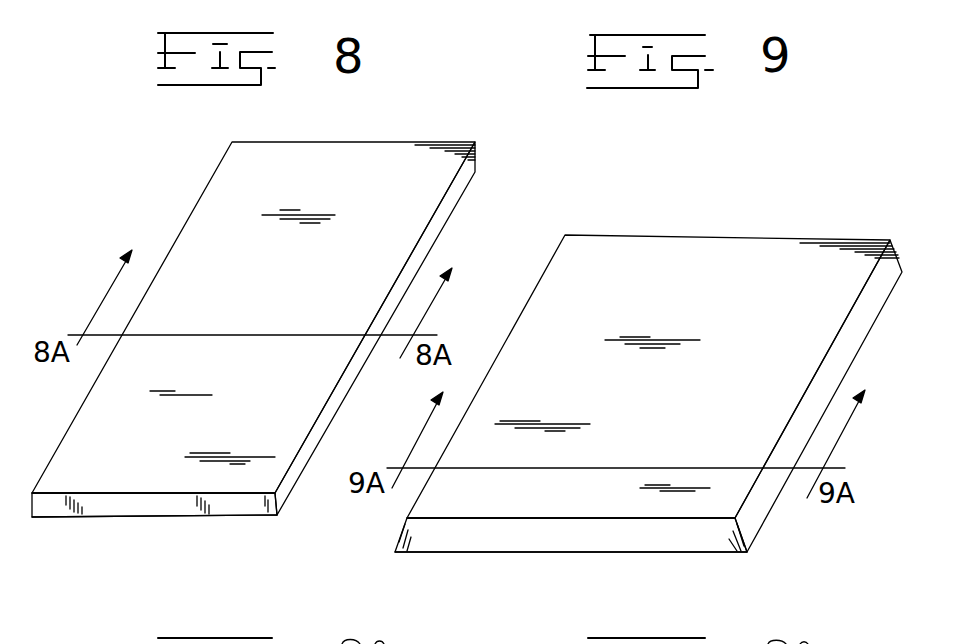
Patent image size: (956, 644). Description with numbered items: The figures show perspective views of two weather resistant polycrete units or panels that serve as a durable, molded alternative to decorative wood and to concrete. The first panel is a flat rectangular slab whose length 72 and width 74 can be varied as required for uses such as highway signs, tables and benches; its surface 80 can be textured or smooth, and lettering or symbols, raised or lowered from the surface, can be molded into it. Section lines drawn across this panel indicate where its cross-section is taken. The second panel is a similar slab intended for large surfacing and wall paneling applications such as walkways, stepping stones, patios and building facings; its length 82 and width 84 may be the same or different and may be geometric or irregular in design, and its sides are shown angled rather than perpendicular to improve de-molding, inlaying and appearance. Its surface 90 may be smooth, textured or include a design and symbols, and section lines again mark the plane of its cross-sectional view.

In FIG. 8, the length 72 is at (329, 421).
In FIG. 8, the surface 80 is at (207, 224).
In FIG. 8, the width 74 is at (136, 503).
In FIG. 9, the length 82 is at (771, 502).
In FIG. 9, the surface 90 is at (563, 297).
In FIG. 9, the width 84 is at (543, 552).